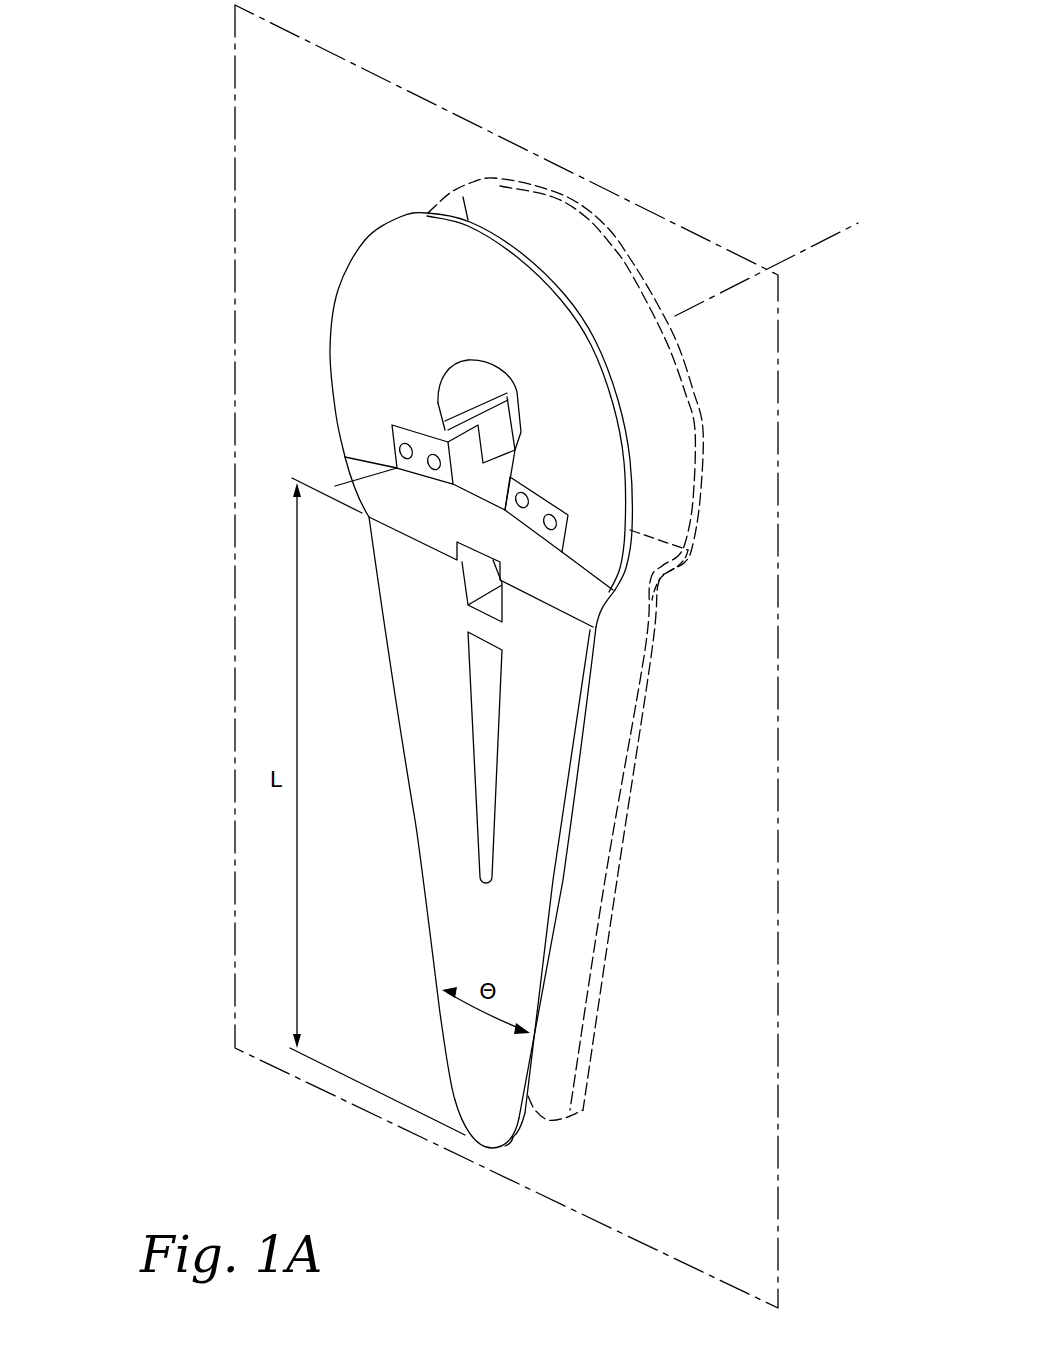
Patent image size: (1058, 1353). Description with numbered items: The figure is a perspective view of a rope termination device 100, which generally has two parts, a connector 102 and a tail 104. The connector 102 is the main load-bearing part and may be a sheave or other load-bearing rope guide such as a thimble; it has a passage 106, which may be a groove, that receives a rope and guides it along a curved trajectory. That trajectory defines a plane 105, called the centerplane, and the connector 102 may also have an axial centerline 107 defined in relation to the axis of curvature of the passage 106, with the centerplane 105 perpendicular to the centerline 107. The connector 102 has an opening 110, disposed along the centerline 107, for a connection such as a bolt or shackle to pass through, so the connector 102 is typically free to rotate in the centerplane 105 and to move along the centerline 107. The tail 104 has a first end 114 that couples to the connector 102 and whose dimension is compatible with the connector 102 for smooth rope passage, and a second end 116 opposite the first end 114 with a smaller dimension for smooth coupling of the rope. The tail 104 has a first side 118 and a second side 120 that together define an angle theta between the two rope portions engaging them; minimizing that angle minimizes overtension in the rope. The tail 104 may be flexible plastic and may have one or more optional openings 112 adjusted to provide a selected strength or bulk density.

The rope termination device 100 is at (346, 189).
The connector 102 is at (331, 318).
The tail 104 is at (506, 845).
The plane 105 is at (417, 93).
The passage 106 is at (612, 295).
The axial centerline 107 is at (798, 257).
The opening 110 is at (461, 378).
The openings 112 is at (485, 687).
The first end 114 is at (669, 584).
The second end 116 is at (521, 1136).
The first side 118 is at (558, 931).
The second side 120 is at (431, 929).